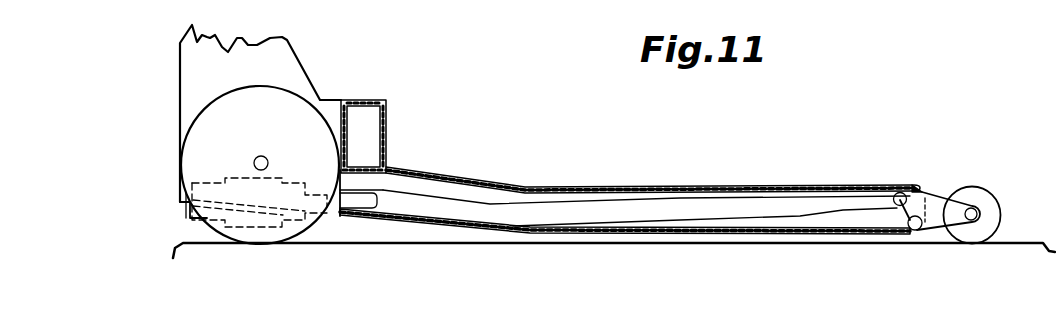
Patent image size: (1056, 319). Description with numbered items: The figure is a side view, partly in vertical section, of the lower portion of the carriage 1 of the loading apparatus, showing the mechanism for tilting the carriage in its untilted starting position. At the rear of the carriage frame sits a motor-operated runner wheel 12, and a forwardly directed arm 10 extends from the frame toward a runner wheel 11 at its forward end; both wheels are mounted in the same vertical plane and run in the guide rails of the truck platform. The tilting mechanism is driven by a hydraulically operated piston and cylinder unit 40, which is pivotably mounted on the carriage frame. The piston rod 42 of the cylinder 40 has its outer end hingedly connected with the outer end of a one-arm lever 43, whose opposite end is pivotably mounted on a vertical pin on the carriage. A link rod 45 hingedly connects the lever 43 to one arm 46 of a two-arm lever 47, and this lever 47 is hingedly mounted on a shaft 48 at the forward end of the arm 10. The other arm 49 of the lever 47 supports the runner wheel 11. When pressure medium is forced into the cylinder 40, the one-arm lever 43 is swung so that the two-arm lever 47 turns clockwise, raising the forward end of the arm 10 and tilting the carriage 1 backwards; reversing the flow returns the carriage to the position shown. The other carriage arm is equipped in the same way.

The carriage 1 is at (342, 98).
The forwardly directed arm 10 is at (750, 185).
The runner wheel 11 is at (983, 200).
The motor-operated runner wheel 12 is at (213, 147).
The hydraulically operated piston and cylinder unit 40 is at (188, 208).
The piston rod 42 is at (333, 203).
The one-arm lever 43 is at (362, 203).
The link rod 45 is at (513, 215).
The arm of two-arm lever 46 is at (918, 188).
The two-arm lever 47 is at (930, 222).
The shaft 48 is at (918, 230).
The other arm of two-arm lever 49 is at (973, 216).